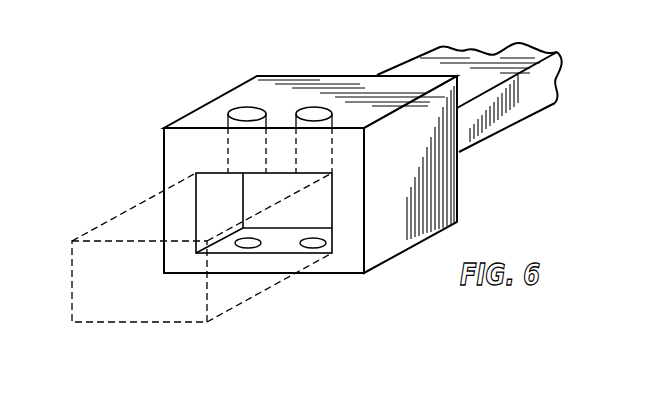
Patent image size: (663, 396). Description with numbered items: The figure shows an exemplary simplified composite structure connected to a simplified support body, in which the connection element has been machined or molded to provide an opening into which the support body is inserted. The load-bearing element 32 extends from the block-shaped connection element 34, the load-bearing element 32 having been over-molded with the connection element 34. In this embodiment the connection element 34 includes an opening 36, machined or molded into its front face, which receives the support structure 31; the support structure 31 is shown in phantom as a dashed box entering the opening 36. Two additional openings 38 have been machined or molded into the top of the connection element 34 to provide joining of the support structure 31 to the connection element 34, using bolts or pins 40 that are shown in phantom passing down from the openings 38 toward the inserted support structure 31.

The support structure 31 is at (148, 322).
The load-bearing element 32 is at (503, 108).
The connection element 34 is at (445, 190).
The opening 36 is at (212, 190).
The openings 38 is at (240, 115).
The bolts or pins 40 is at (230, 153).